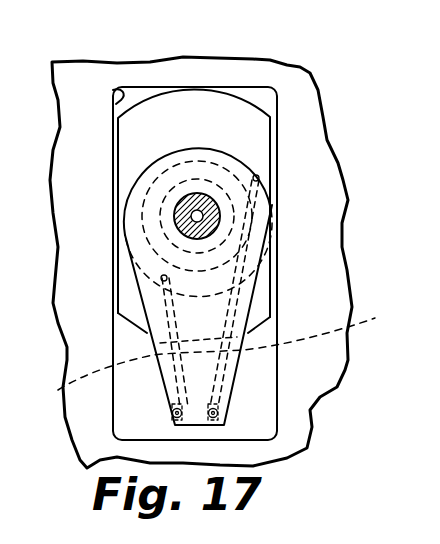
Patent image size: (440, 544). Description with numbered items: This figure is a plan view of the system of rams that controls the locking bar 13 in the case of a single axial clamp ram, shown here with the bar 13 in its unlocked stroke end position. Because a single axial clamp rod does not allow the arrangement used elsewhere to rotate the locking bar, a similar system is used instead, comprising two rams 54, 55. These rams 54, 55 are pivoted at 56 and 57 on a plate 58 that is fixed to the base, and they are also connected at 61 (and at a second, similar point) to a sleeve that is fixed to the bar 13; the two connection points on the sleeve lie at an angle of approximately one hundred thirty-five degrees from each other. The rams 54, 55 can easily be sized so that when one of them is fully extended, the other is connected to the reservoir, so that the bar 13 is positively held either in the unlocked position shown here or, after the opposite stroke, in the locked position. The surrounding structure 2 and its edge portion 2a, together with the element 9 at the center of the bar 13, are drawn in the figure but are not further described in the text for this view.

The plate 2 is at (103, 77).
The plate edge flange 2a is at (113, 90).
The locking bar 13 is at (242, 115).
The shaft 9 is at (205, 214).
The ram 54 is at (200, 214).
The plate 58 is at (250, 292).
The connection point 61 is at (260, 177).
The ram 55 is at (233, 349).
The pivot 56 is at (173, 415).
The pivot 57 is at (220, 417).